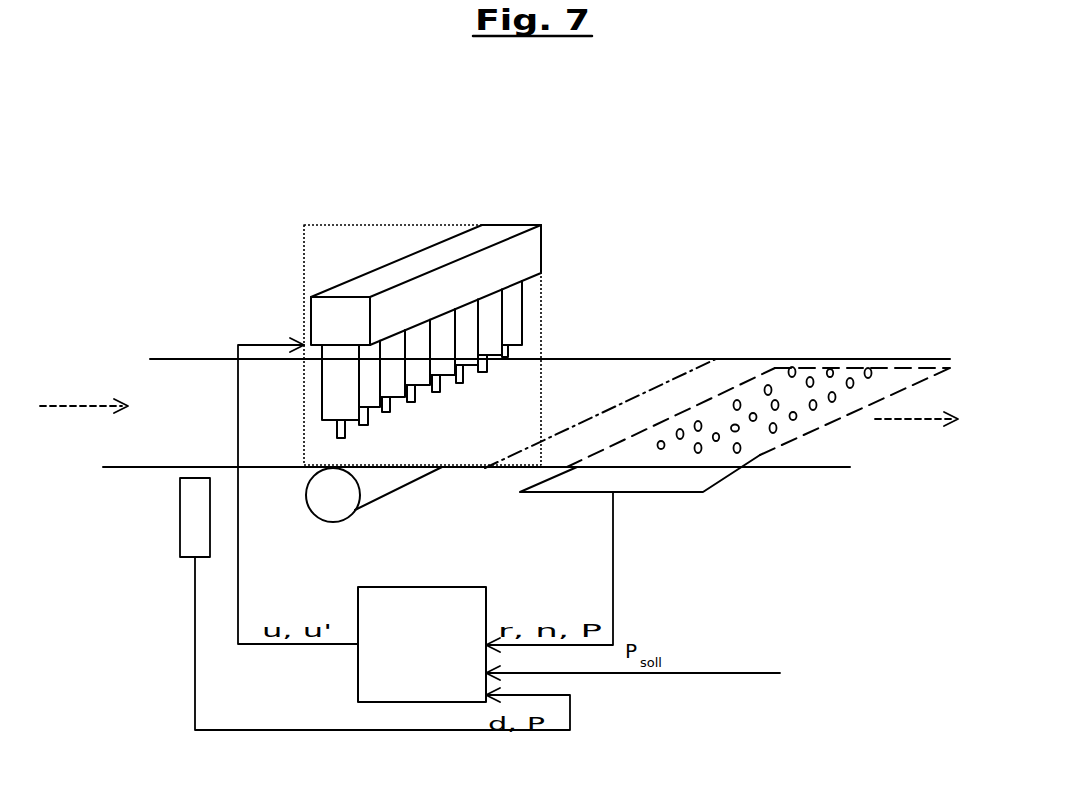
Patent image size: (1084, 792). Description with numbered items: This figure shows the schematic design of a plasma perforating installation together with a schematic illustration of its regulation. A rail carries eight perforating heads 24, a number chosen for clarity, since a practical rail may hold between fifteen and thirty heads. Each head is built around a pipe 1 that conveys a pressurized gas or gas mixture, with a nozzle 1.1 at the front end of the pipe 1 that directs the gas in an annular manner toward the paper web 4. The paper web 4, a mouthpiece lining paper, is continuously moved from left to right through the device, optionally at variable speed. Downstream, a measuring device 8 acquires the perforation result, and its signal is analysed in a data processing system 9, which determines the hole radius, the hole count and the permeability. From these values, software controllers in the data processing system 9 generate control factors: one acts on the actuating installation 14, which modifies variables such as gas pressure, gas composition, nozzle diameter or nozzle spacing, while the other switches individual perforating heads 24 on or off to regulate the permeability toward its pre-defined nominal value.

The pipe 1 is at (500, 296).
The nozzle 1.1 is at (508, 352).
The paper web 4 is at (868, 393).
The measuring device 8 is at (683, 478).
The data processing system 9 is at (422, 644).
The actuating installation 14 is at (399, 296).
The perforating heads 24 is at (312, 227).